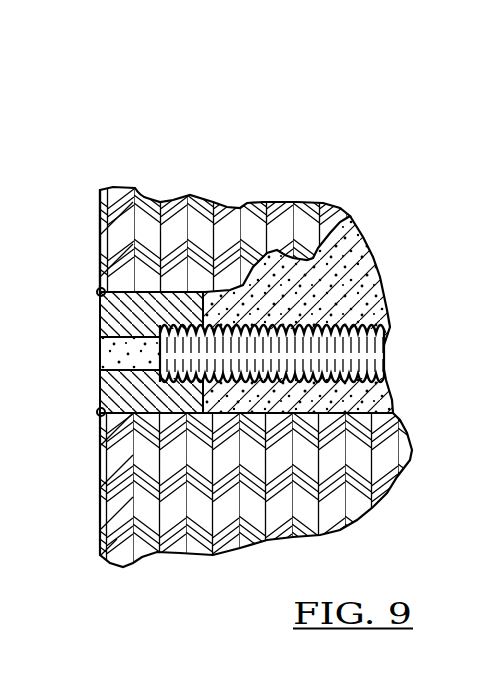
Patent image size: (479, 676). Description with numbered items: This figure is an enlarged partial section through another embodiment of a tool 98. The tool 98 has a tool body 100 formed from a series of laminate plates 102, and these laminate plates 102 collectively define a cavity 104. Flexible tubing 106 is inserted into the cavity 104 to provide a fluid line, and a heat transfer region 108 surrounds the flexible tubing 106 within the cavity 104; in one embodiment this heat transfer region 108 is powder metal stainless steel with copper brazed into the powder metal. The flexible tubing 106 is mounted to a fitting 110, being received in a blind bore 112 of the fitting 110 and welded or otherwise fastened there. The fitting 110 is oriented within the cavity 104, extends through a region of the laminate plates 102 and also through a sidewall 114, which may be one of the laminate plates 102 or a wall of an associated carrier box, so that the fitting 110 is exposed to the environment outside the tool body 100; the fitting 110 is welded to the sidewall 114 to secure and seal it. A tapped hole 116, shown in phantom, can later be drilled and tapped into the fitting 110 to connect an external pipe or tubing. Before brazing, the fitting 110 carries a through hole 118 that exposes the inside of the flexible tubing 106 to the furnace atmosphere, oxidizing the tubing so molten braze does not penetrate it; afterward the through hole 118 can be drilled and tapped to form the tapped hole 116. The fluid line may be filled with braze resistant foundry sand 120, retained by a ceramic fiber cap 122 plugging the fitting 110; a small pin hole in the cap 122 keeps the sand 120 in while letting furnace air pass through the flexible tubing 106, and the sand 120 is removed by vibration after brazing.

The tool 98 is at (266, 99).
The tool body 100 is at (232, 196).
The laminate plates 102 is at (172, 205).
The cavity 104 is at (380, 408).
The flexible tubing 106 is at (338, 328).
The heat transfer region 108 is at (353, 262).
The fitting 110 is at (97, 300).
The blind bore 112 is at (172, 382).
The sidewall 114 is at (100, 195).
The tapped hole 116 is at (98, 412).
The through hole 118 is at (120, 368).
The foundry sand 120 is at (383, 345).
The ceramic fiber cap 122 is at (103, 340).